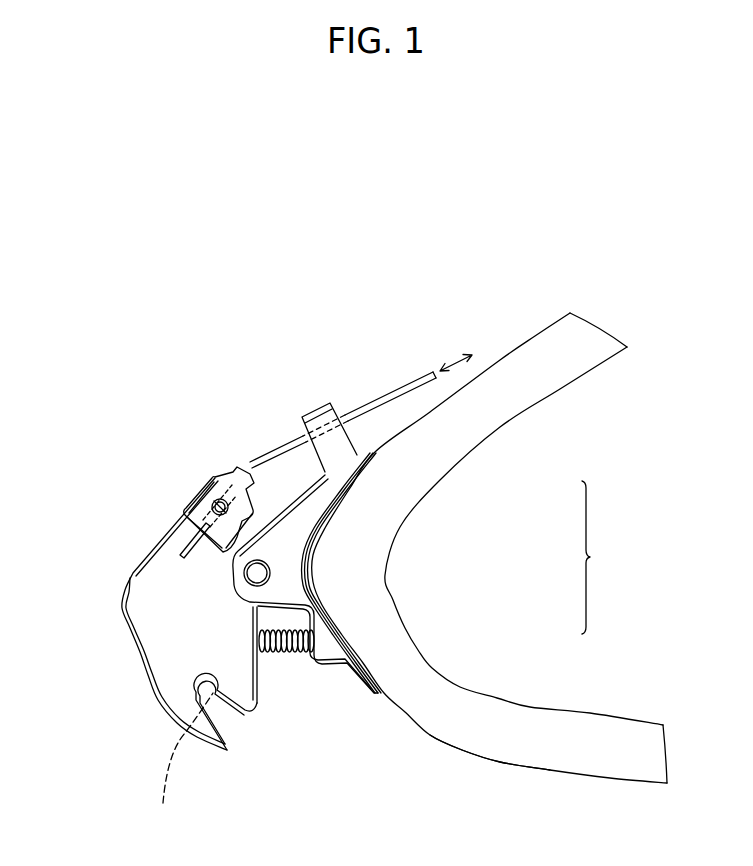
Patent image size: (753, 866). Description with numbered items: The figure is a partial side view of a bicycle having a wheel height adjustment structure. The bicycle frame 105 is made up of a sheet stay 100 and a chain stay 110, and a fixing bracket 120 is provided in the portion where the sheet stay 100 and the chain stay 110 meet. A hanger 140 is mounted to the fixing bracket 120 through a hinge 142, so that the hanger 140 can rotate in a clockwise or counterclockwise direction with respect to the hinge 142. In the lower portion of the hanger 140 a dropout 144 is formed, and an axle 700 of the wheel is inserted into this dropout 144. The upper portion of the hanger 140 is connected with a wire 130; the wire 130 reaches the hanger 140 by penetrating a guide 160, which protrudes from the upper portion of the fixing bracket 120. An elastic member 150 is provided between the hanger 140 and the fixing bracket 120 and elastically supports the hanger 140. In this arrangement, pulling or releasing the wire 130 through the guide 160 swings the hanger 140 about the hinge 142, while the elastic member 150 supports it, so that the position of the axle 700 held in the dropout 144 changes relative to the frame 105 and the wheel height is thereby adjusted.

The sheet stay 100 is at (537, 390).
The bicycle frame 105 is at (603, 557).
The chain stay 110 is at (532, 717).
The fixing bracket 120 is at (297, 523).
The wire 130 is at (387, 397).
The hanger 140 is at (153, 585).
The hinge 142 is at (257, 573).
The dropout 144 is at (223, 713).
The elastic member 150 is at (290, 650).
The guide 160 is at (318, 417).
The axle 700 is at (180, 764).